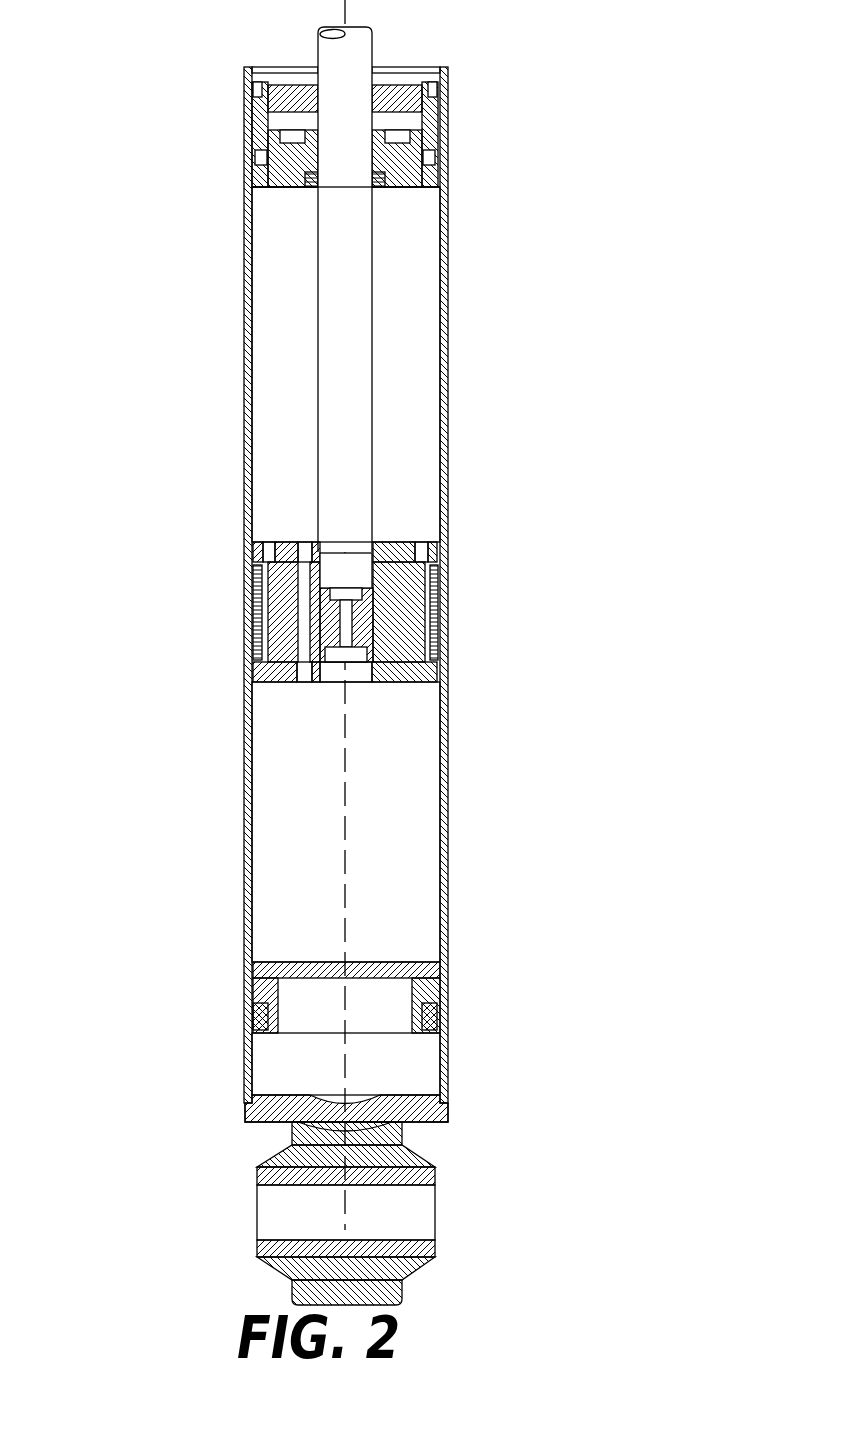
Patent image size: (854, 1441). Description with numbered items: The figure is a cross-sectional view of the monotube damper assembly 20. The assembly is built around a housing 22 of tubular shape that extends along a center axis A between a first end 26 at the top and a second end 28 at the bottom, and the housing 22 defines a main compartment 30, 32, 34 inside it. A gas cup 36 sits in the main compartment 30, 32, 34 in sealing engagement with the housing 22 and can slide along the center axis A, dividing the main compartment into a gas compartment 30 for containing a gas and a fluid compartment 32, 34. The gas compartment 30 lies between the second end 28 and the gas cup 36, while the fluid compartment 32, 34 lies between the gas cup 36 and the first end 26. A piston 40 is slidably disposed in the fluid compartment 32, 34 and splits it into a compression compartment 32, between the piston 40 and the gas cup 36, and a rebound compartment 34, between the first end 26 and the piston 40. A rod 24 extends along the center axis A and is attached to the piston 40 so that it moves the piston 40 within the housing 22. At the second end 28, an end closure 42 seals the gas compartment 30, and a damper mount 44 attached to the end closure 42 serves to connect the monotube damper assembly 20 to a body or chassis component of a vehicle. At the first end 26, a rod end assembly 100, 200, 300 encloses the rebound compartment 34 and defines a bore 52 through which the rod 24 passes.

The monotube damper assembly 20 is at (138, 60).
The housing 22 is at (244, 303).
The rod 24 is at (332, 453).
The first end 26 is at (447, 66).
The second end 28 is at (445, 1103).
The gas compartment 30 is at (420, 1060).
The compression compartment 32 is at (413, 760).
The rebound compartment 34 is at (413, 298).
The gas cup 36 is at (270, 962).
The piston 40 is at (280, 533).
The end closure 42 is at (250, 1117).
The damper mount 44 is at (258, 1172).
The bore 52 is at (326, 160).
The rod end assembly 100 is at (274, 151).
The rod end assembly 200 is at (274, 151).
The rod end assembly 300 is at (236, 124).
The center axis A is at (345, 846).